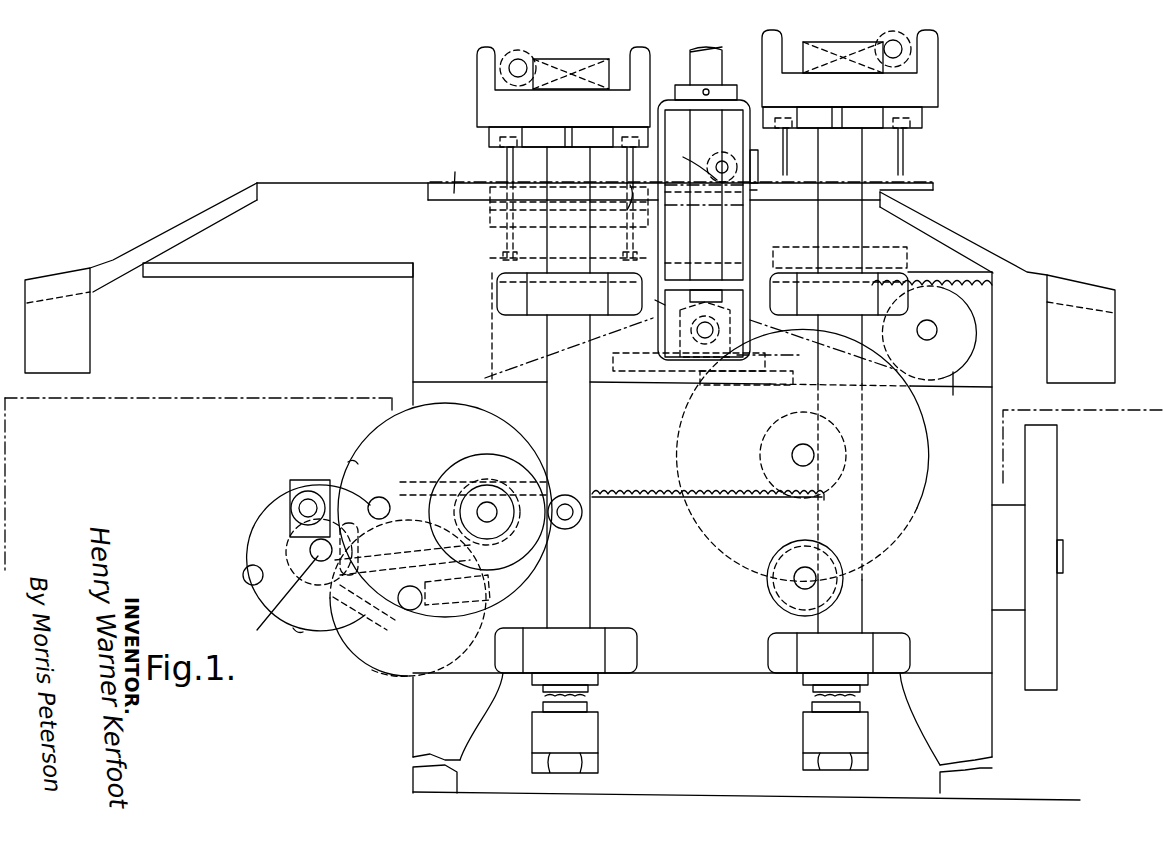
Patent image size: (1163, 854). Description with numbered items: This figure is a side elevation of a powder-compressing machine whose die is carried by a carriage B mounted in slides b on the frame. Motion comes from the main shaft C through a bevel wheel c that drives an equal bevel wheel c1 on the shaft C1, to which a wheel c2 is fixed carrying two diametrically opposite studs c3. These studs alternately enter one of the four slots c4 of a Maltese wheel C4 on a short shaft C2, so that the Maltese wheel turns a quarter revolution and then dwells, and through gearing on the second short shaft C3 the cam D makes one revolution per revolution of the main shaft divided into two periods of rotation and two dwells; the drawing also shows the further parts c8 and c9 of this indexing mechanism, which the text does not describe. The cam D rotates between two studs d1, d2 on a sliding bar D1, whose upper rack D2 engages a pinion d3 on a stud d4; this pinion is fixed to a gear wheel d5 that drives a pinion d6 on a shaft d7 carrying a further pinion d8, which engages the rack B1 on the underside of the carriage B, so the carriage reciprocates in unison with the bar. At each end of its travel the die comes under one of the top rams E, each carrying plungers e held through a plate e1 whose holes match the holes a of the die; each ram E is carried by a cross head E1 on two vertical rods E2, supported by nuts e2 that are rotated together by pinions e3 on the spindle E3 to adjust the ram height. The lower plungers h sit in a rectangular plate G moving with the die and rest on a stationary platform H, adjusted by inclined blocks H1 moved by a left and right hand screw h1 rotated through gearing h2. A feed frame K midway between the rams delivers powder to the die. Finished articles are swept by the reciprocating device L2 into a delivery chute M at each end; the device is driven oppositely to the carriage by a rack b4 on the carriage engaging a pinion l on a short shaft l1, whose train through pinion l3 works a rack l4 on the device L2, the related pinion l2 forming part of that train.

The carriage B is at (288, 198).
The rack B1 is at (955, 270).
The reciprocating device L2 is at (927, 186).
The delivery chute M is at (570, 325).
The slides b is at (420, 273).
The rack b4 is at (766, 210).
The cross head E1 is at (485, 107).
The top ram E is at (548, 127).
The nut e2 is at (577, 62).
The pinion e3 is at (518, 58).
The spindle E3 is at (702, 398).
The plungers e is at (507, 163).
The plate e1 is at (532, 147).
The holes a is at (507, 198).
The vertical rods E2 is at (588, 592).
The stationary platform H is at (497, 270).
The inclined blocks H1 is at (533, 368).
The rectangular plate G is at (569, 222).
The lower plungers h is at (503, 238).
The left and right hand screw h1 is at (625, 370).
The gearing h2 is at (653, 293).
The feed frame K is at (704, 203).
The pinion l is at (722, 154).
The short shaft l1 is at (702, 195).
The rod l2 is at (718, 190).
The pinion l3 is at (696, 154).
The rack l4 is at (762, 156).
The cam D is at (445, 510).
The second short shaft C3 is at (487, 512).
The stud d1 is at (575, 503).
The sliding bar D1 is at (295, 450).
The rack D2 is at (635, 492).
The stud d2 is at (309, 490).
The pinion d3 is at (760, 456).
The stud d4 is at (800, 455).
The gear wheel d5 is at (930, 470).
The pinion d6 is at (965, 394).
The shaft d7 is at (930, 338).
The pinion d8 is at (974, 335).
The wheel c2 is at (262, 528).
The studs c3 is at (243, 577).
The shaft C1 is at (287, 603).
The bevel wheel c1 is at (318, 563).
The bevel wheel c is at (319, 536).
The short shaft C2 is at (408, 612).
The Maltese wheel C4 is at (352, 655).
The slots c4 is at (433, 680).
The spring c8 is at (380, 668).
The stop c9 is at (352, 460).
The main shaft C is at (1063, 542).